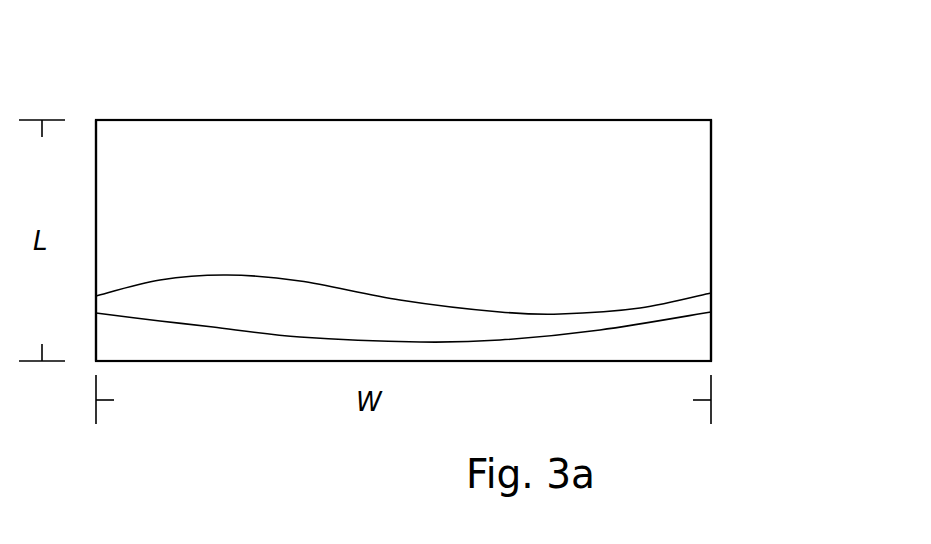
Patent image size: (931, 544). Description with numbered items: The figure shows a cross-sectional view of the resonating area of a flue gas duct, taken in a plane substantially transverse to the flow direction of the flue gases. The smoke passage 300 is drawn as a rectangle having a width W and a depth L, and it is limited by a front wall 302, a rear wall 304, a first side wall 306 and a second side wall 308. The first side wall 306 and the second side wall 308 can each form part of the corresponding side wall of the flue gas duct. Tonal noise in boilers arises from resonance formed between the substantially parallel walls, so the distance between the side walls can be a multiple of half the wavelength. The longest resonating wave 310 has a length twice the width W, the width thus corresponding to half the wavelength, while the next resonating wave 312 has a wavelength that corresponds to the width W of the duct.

The smoke passage 300 is at (400, 253).
The front wall 302 is at (275, 383).
The rear wall 304 is at (357, 107).
The first side wall 306 is at (86, 222).
The second side wall 308 is at (713, 215).
The longest resonating wave 310 is at (695, 316).
The resonating wave 312 is at (669, 306).